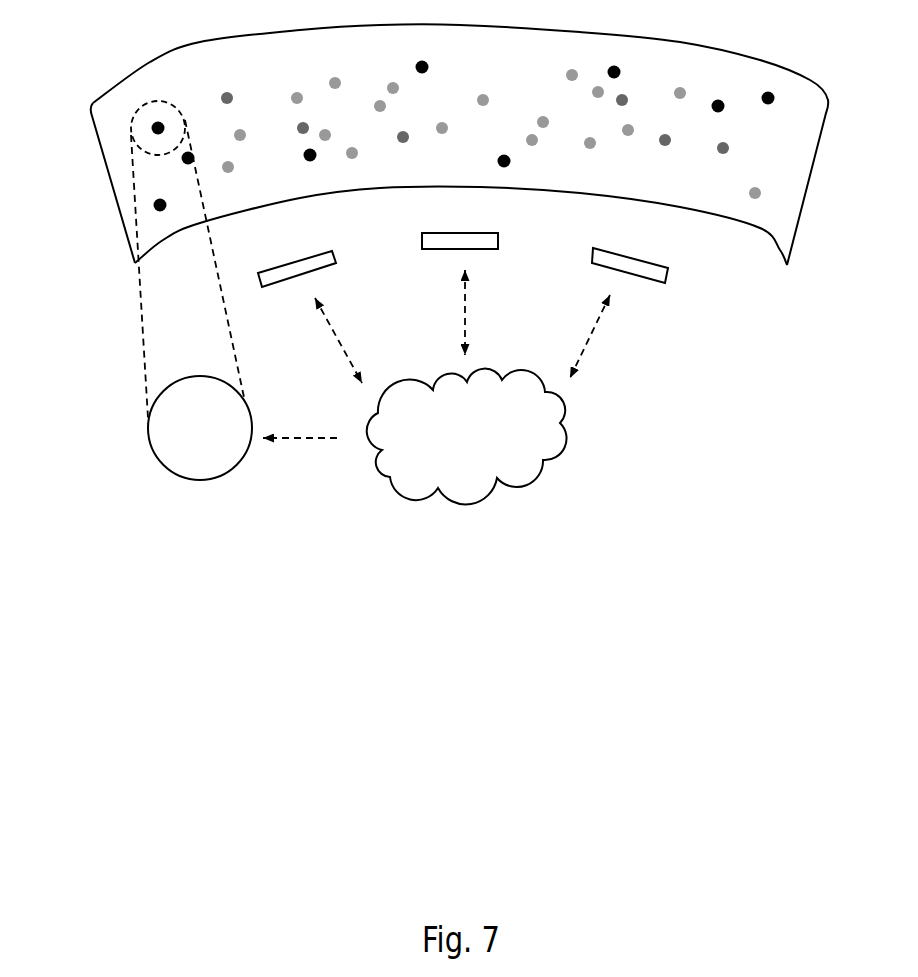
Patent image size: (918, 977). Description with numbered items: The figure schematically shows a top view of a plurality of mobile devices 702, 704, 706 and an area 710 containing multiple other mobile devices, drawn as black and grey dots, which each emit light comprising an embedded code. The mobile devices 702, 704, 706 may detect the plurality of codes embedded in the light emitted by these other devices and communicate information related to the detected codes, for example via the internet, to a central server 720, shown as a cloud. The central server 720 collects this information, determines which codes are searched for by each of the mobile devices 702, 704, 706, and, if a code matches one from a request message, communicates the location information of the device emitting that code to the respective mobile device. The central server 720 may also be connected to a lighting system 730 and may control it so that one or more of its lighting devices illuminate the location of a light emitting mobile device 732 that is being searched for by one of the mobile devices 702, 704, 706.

The area 710 is at (290, 47).
The light emitting mobile device 732 is at (167, 112).
The lighting system 730 is at (213, 455).
The mobile device 702 is at (328, 263).
The mobile device 704 is at (482, 240).
The mobile device 706 is at (655, 272).
The central server 720 is at (548, 440).